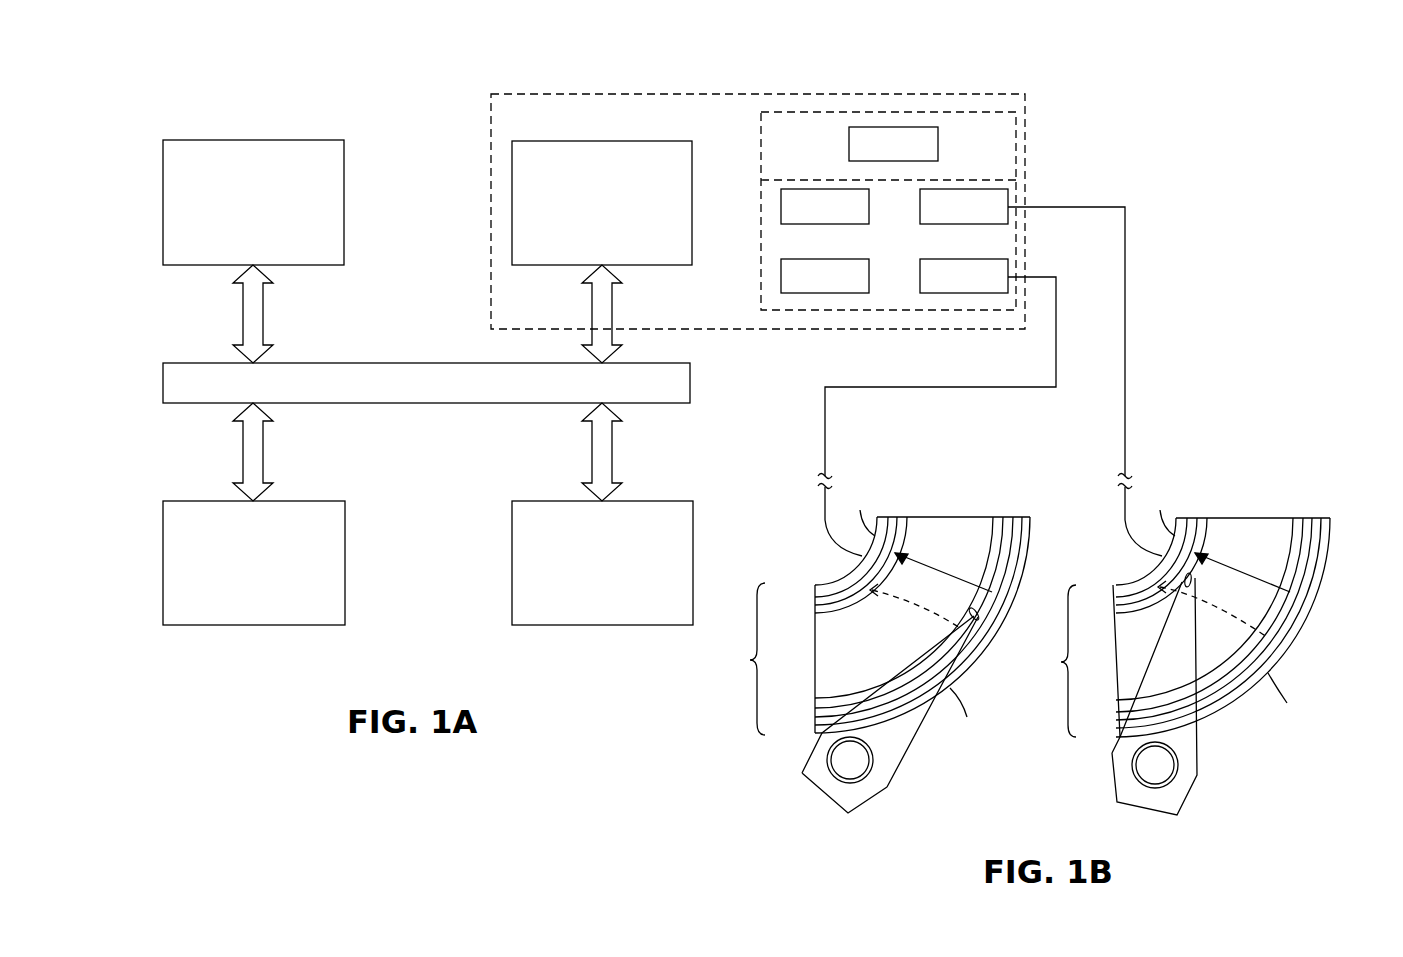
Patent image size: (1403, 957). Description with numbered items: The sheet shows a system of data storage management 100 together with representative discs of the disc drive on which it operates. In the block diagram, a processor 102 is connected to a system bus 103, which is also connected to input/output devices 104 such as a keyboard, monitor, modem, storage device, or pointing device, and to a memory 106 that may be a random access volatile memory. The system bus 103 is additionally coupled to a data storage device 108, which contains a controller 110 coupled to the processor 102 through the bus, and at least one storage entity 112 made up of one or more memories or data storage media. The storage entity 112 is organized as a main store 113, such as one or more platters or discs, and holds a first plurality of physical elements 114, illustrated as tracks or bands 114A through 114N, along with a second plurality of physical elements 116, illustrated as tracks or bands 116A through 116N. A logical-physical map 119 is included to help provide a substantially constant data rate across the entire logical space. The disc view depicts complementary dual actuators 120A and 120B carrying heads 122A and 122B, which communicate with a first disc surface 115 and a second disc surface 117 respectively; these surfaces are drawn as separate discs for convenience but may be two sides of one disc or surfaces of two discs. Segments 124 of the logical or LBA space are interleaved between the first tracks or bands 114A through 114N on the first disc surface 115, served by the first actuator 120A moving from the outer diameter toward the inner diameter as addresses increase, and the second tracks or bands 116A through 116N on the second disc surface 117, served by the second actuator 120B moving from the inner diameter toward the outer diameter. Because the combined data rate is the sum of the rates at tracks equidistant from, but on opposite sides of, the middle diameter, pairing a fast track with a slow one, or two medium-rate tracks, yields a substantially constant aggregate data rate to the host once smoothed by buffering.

In FIG. 1A, the system of data storage management 100 is at (140, 80).
In FIG. 1A, the processor 102 is at (205, 140).
In FIG. 1A, the system bus 103 is at (200, 363).
In FIG. 1A, the input/output (I/O) devices 104 is at (200, 501).
In FIG. 1A, the memory 106 is at (552, 501).
In FIG. 1A, the data storage device 108 is at (503, 94).
In FIG. 1A, the controller 110 is at (551, 141).
In FIG. 1A, the storage entity 112 is at (1016, 133).
In FIG. 1A, the main store 113 is at (987, 189).
In FIG. 1A, the first plurality of physical elements 114 is at (855, 271).
In FIG. 1A, the first physical track or band 114A is at (825, 276).
In FIG. 1B, the first physical track or band 114A is at (1027, 517).
In FIG. 1A, the first physical track or band 114N is at (964, 276).
In FIG. 1B, the first physical track or band 114N is at (884, 517).
In FIG. 1A, the second plurality of physical elements 116 is at (855, 202).
In FIG. 1A, the second physical track or band 116A is at (825, 206).
In FIG. 1B, the second physical track or band 116A is at (1327, 518).
In FIG. 1A, the second physical track or band 116N is at (964, 206).
In FIG. 1B, the second physical track or band 116N is at (1184, 518).
In FIG. 1A, the logical-physical map 119 is at (893, 144).
In FIG. 1B, the first disc surface 115 is at (815, 557).
In FIG. 1B, the second disc surface 117 is at (1125, 557).
In FIG. 1B, the first actuator 120A is at (900, 800).
In FIG. 1B, the second actuator 120B is at (1210, 800).
In FIG. 1B, the first head 122A is at (969, 612).
In FIG. 1B, the second head 122B is at (1193, 584).
In FIG. 1B, the segments of the logical space 124 is at (912, 660).